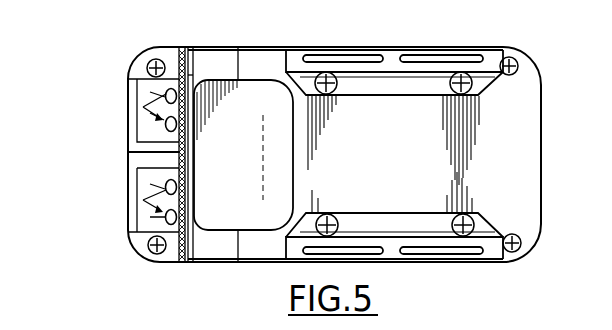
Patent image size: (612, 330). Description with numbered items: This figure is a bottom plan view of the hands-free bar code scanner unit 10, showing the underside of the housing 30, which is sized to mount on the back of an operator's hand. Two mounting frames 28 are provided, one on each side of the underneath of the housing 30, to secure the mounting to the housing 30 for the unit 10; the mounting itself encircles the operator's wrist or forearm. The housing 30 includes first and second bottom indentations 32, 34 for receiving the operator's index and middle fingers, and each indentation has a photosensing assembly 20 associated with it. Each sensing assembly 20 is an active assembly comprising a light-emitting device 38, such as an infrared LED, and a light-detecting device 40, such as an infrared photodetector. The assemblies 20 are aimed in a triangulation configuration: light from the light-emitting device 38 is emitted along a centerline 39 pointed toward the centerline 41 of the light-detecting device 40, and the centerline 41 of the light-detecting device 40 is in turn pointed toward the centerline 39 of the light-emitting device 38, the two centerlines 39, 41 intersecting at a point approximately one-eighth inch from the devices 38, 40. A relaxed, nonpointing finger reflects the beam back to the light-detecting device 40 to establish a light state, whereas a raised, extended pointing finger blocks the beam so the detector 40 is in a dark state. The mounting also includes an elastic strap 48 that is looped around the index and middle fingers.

The hands-free bar code scanner unit 10 is at (341, 38).
The photosensing assembly 20 is at (171, 110).
The mounting frame 28 is at (458, 52).
The housing 30 is at (398, 164).
The first bottom indentation 32 is at (140, 106).
The second bottom indentation 34 is at (140, 200).
The light-emitting device 38 is at (165, 93).
The centerline of light-emitting device beam 39 is at (150, 92).
The light-detecting device 40 is at (165, 126).
The centerline of light-detecting device 41 is at (150, 113).
The elastic strap 48 is at (128, 155).